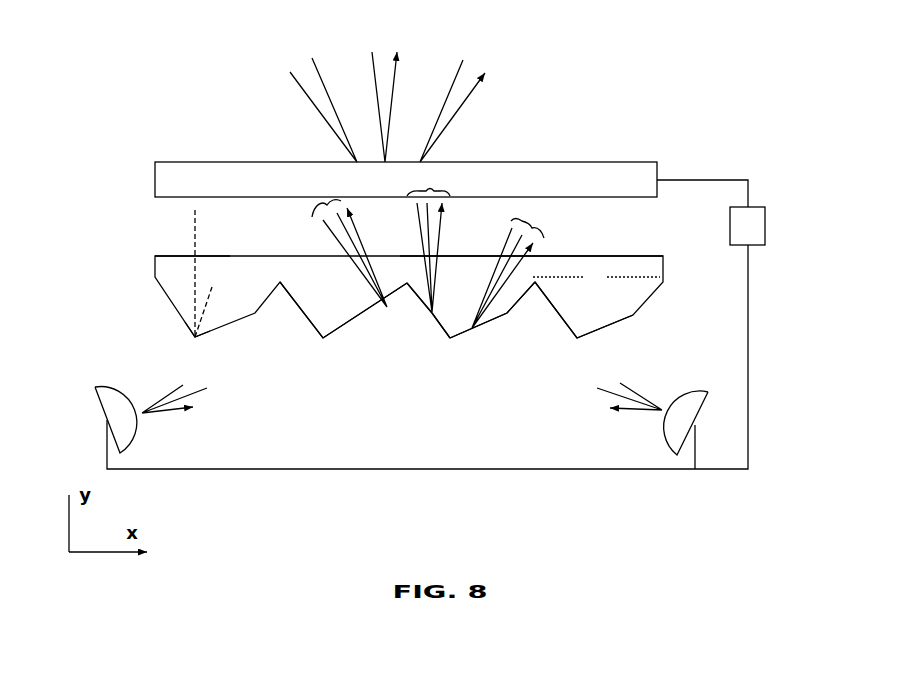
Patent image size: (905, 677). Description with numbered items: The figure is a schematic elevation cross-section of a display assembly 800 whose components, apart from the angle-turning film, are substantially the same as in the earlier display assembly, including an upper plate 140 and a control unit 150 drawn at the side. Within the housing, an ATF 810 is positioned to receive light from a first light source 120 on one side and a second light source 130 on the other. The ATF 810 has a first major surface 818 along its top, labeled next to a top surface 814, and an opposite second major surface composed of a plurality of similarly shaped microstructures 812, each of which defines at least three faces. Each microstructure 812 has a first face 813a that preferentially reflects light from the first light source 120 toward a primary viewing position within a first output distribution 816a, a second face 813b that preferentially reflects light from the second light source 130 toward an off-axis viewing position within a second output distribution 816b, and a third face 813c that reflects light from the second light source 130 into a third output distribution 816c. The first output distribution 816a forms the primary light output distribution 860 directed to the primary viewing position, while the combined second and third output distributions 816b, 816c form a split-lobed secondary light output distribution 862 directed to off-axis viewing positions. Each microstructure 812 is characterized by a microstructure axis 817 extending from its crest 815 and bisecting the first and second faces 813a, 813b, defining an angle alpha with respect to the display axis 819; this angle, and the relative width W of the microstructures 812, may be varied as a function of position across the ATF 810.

The display assembly 800 is at (137, 120).
The diffuser plate 140 is at (593, 167).
The controller 150 is at (765, 210).
The ATF 810 is at (155, 275).
The top surface of prism structure 814 is at (563, 257).
The first major surface 818 is at (172, 253).
The display axis 819 is at (197, 252).
The microstructure axis 817 is at (213, 302).
The crest 815 is at (200, 335).
The microstructure 812 is at (332, 322).
The first face 813a is at (433, 325).
The second face 813b is at (470, 333).
The third face 813c is at (520, 303).
The first output distribution 816a is at (427, 237).
The second output distribution 816b is at (515, 261).
The third output distribution 816c is at (336, 241).
The primary light output distribution 860 is at (385, 94).
The split-lobed secondary light output distribution 862 is at (388, 101).
The second light source 130 is at (117, 400).
The first light source 120 is at (683, 400).